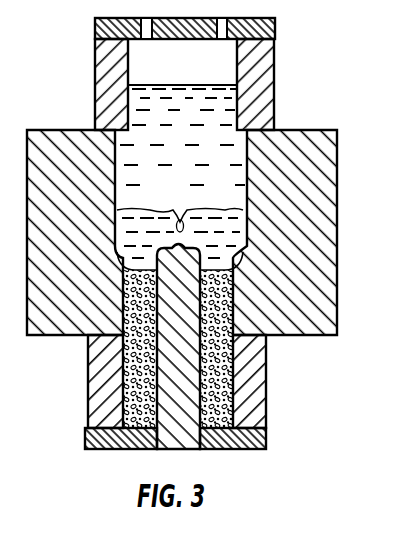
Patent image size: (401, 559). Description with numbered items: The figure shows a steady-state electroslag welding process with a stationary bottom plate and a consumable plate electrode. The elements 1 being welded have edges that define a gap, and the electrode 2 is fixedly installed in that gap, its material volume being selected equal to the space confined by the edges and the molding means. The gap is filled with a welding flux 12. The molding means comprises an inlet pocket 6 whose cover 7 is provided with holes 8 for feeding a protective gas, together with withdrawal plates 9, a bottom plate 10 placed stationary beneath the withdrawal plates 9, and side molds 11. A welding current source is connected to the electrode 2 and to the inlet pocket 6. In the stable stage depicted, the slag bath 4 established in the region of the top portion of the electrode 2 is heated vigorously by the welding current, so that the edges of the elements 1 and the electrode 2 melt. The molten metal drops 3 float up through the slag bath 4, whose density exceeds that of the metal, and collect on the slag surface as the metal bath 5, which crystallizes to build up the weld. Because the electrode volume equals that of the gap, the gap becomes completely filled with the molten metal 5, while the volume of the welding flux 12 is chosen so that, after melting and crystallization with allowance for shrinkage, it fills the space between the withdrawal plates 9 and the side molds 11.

The elements being welded 1 is at (322, 161).
The electrode 2 is at (197, 385).
The molten metal drops 3 is at (180, 220).
The slag bath 4 is at (222, 237).
The metal bath 5 is at (167, 117).
The inlet pocket 6 is at (262, 96).
The cover 7 is at (275, 27).
The holes 8 is at (224, 39).
The withdrawal plates 9 is at (258, 410).
The bottom plate 10 is at (238, 450).
The side molds 11 is at (220, 67).
The welding flux 12 is at (205, 362).